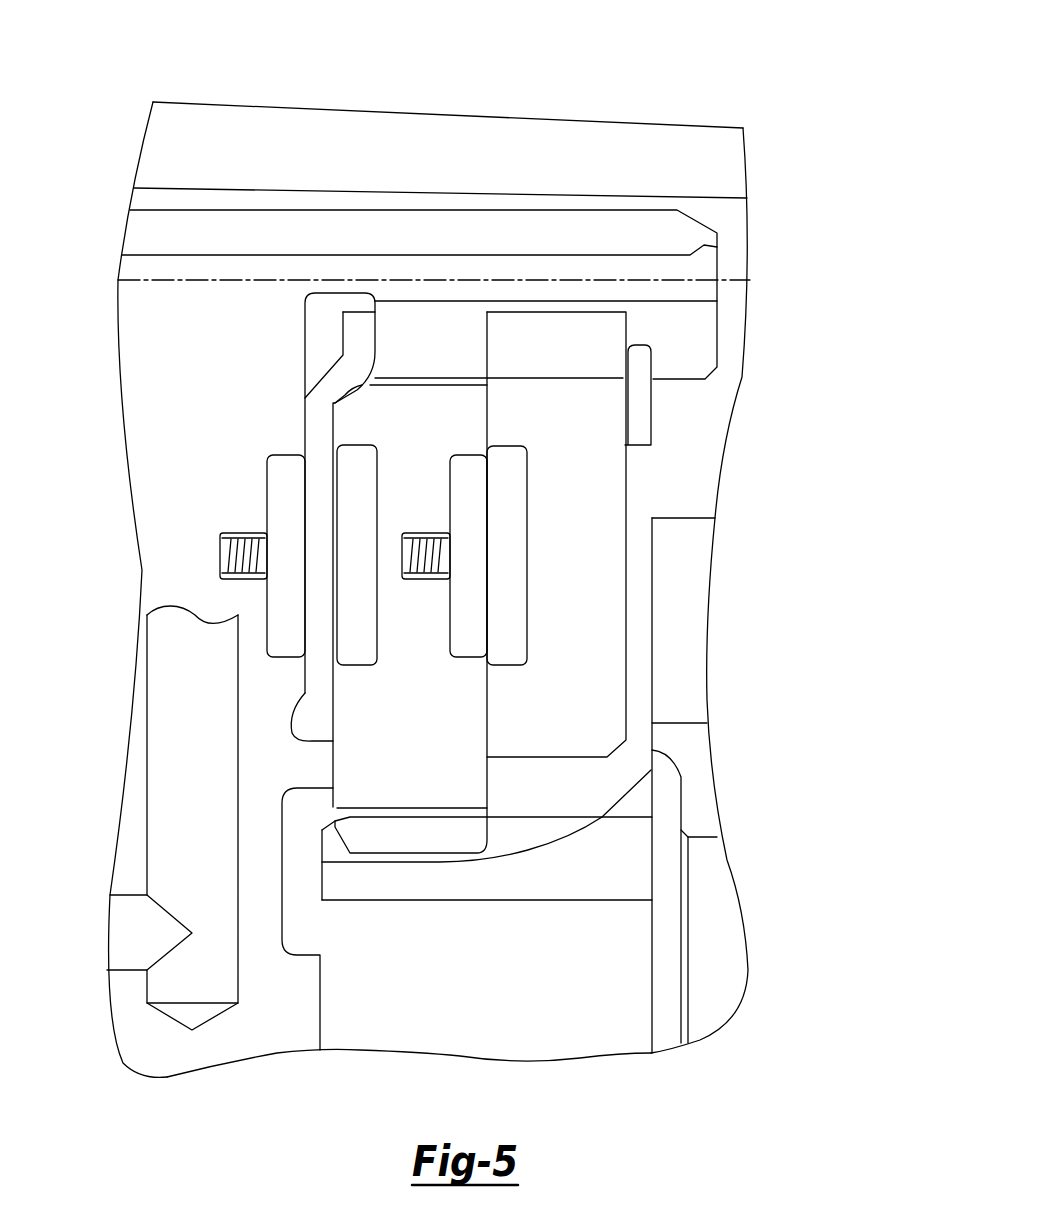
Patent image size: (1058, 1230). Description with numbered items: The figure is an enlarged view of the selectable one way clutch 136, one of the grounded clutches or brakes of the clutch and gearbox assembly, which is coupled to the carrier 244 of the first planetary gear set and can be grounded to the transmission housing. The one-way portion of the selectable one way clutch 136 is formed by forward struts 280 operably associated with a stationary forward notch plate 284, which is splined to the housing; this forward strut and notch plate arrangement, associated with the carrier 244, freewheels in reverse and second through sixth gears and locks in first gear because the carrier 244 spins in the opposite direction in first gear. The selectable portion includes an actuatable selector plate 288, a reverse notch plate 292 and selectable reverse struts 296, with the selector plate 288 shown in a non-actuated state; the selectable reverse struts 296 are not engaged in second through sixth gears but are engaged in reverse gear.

The selectable one way clutch 136 is at (604, 84).
The carrier 244 is at (598, 872).
The forward struts 280 is at (467, 465).
The forward notch plate 284 is at (527, 508).
The selector plate 288 is at (357, 328).
The reverse notch plate 292 is at (347, 667).
The selectable reverse struts 296 is at (290, 453).